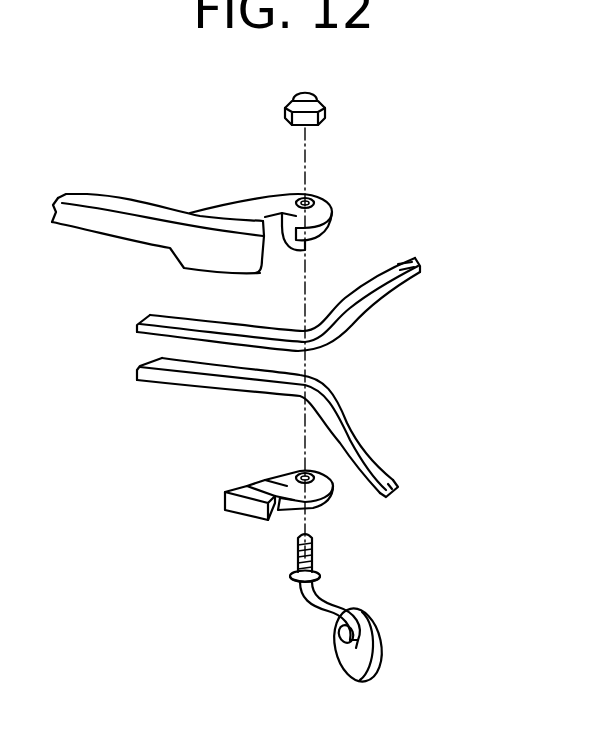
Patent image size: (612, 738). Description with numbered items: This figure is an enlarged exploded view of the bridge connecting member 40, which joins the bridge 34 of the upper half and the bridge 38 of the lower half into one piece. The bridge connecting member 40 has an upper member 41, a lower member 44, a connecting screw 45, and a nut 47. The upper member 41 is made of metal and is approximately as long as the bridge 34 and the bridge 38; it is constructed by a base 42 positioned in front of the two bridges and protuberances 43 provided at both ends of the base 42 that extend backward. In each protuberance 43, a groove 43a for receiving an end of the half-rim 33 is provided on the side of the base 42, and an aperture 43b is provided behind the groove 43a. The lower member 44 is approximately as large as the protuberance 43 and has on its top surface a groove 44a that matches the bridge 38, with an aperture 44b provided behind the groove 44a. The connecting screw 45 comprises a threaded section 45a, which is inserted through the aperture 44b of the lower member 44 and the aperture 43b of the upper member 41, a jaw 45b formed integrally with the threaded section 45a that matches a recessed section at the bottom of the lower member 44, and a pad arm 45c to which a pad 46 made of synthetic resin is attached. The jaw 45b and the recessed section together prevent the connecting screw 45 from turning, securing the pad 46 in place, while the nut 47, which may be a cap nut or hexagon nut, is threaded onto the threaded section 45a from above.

The bridge connecting member 40 is at (424, 386).
The upper member 41 is at (180, 193).
The base 42 is at (117, 229).
The protuberance 43 is at (253, 200).
The groove 43a is at (313, 252).
The aperture 43b is at (314, 198).
The nut 47 is at (326, 112).
The half-rim 33 is at (353, 300).
The bridge 34 is at (150, 317).
The bridge 38 is at (165, 377).
The lower member 44 is at (247, 513).
The groove 44a is at (262, 488).
The aperture 44b is at (298, 470).
The connecting screw 45 is at (308, 613).
The threaded section 45a is at (313, 546).
The jaw 45b is at (290, 587).
The pad arm 45c is at (333, 594).
The pad 46 is at (373, 646).